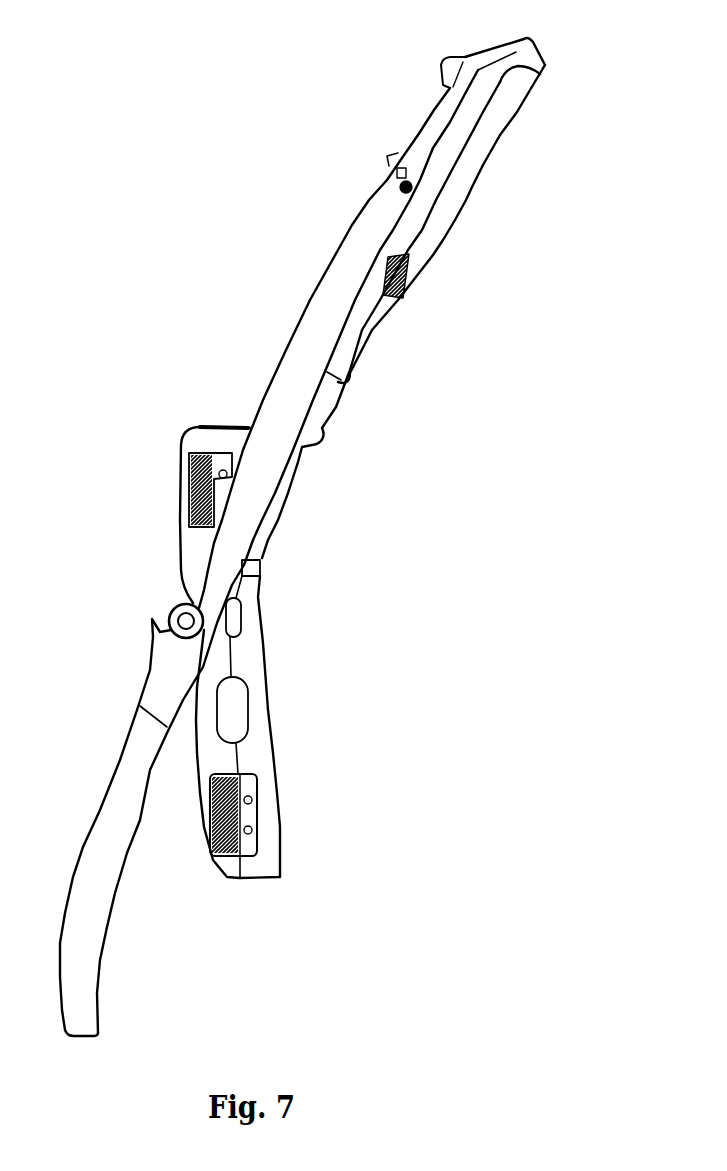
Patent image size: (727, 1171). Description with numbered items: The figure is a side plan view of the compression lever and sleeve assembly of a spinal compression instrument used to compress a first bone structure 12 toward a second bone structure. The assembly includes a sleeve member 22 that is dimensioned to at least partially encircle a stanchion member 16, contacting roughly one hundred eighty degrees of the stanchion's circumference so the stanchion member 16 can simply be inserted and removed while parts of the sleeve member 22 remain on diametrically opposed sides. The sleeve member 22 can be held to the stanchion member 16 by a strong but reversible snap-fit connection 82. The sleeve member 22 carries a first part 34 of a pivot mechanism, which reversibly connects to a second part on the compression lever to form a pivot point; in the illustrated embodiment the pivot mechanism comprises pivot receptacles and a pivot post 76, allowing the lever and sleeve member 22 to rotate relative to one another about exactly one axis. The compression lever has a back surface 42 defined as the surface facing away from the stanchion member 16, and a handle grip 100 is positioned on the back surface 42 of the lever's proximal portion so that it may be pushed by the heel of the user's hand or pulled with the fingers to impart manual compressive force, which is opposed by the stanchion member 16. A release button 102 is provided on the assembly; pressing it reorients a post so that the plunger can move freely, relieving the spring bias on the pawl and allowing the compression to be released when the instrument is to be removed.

The first bone structure 12 is at (201, 135).
The stanchion member 16 is at (541, 43).
The sleeve member 22 is at (260, 650).
The first part of pivot mechanism 34 is at (178, 612).
The pivot post 76 is at (186, 621).
The back surface 42 is at (524, 84).
The snap-fit connection 82 is at (197, 472).
The handle grip 100 is at (462, 175).
The release button 102 is at (450, 57).